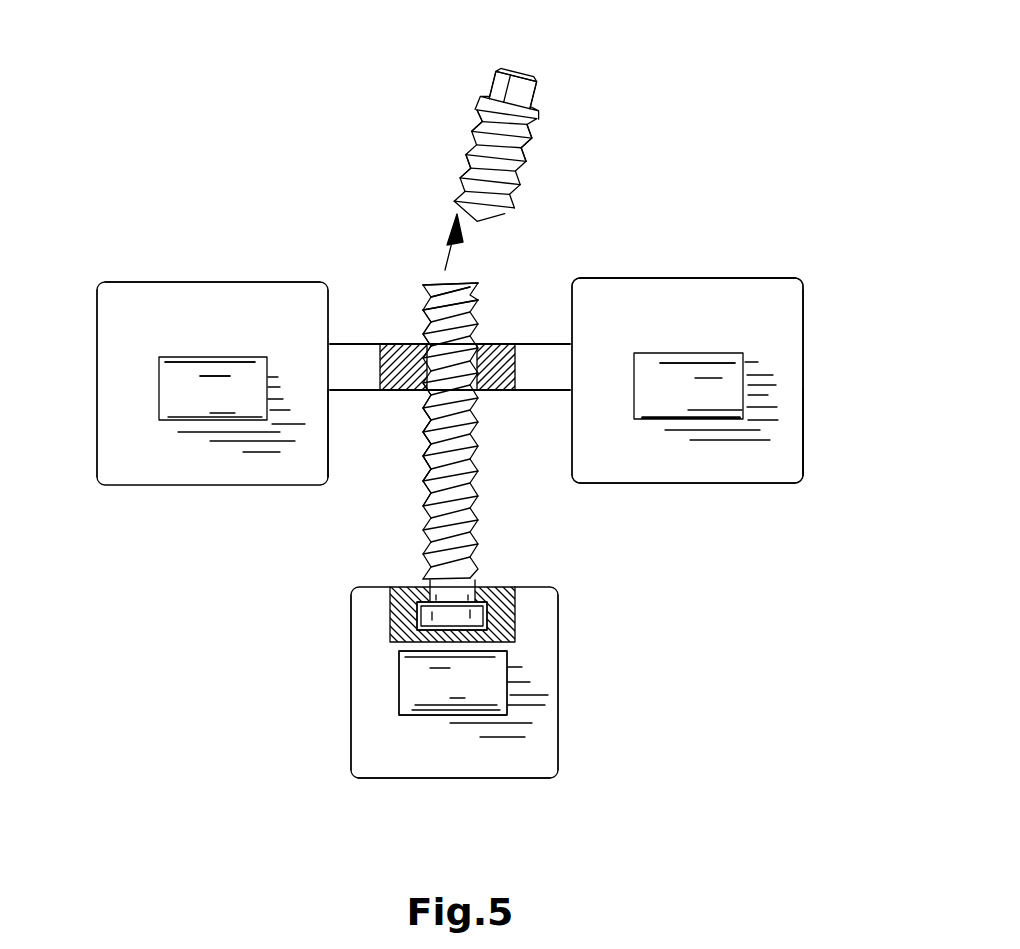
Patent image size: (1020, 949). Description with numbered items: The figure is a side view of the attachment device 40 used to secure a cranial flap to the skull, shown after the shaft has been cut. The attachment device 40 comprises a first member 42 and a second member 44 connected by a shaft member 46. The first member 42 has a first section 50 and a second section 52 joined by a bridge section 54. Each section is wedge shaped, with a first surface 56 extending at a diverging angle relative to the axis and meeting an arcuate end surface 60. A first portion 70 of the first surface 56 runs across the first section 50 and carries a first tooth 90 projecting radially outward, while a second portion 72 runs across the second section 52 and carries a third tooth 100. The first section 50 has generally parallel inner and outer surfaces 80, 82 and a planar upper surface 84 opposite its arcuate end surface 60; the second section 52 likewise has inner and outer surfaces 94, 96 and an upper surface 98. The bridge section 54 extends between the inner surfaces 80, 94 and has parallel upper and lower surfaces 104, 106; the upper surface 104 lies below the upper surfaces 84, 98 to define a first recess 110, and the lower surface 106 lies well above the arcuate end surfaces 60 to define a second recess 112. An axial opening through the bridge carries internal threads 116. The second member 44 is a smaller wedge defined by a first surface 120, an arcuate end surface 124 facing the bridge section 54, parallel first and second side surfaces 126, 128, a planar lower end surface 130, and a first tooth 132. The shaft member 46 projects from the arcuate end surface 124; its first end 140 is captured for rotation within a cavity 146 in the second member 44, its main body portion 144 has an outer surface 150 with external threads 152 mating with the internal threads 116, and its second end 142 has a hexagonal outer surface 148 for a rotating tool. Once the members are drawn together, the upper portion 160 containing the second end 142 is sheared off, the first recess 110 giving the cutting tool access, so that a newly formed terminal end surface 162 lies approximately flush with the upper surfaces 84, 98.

The attachment device 40 is at (632, 192).
The first member 42 is at (737, 487).
The second member 44 is at (557, 752).
The shaft member 46 is at (476, 510).
The first section 50 is at (805, 296).
The second section 52 is at (120, 280).
The bridge section 54 is at (557, 348).
The first surface 56 is at (215, 305).
The arcuate end surface 60 is at (213, 487).
The first portion of the first surface 70 is at (780, 460).
The second portion of the first surface 72 is at (297, 308).
The inner surface 80 is at (570, 452).
The outer surface 82 is at (805, 417).
The upper surface 84 is at (688, 295).
The first tooth 90 is at (700, 375).
The inner surface 94 is at (328, 415).
The outer surface 96 is at (98, 430).
The upper surface 98 is at (178, 280).
The third tooth 100 is at (187, 410).
The upper surface 104 is at (540, 340).
The lower surface 106 is at (503, 390).
The first recess 110 is at (503, 322).
The second recess 112 is at (407, 418).
The internal threads 116 is at (430, 330).
The first surface 120 is at (537, 639).
The arcuate end surface 124 is at (526, 589).
The first side surface 126 is at (350, 733).
The second side surface 128 is at (508, 686).
The lower end surface 130 is at (517, 778).
The first tooth 132 is at (427, 693).
The first end 140 is at (423, 613).
The second end 142 is at (512, 80).
The main body portion 144 is at (418, 303).
The cavity 146 is at (470, 617).
The hexagonal outer surface 148 is at (497, 92).
The outer surface 150 is at (522, 130).
The external threads 152 is at (480, 128).
The upper portion 160 is at (478, 178).
The terminal end surface 162 is at (455, 290).